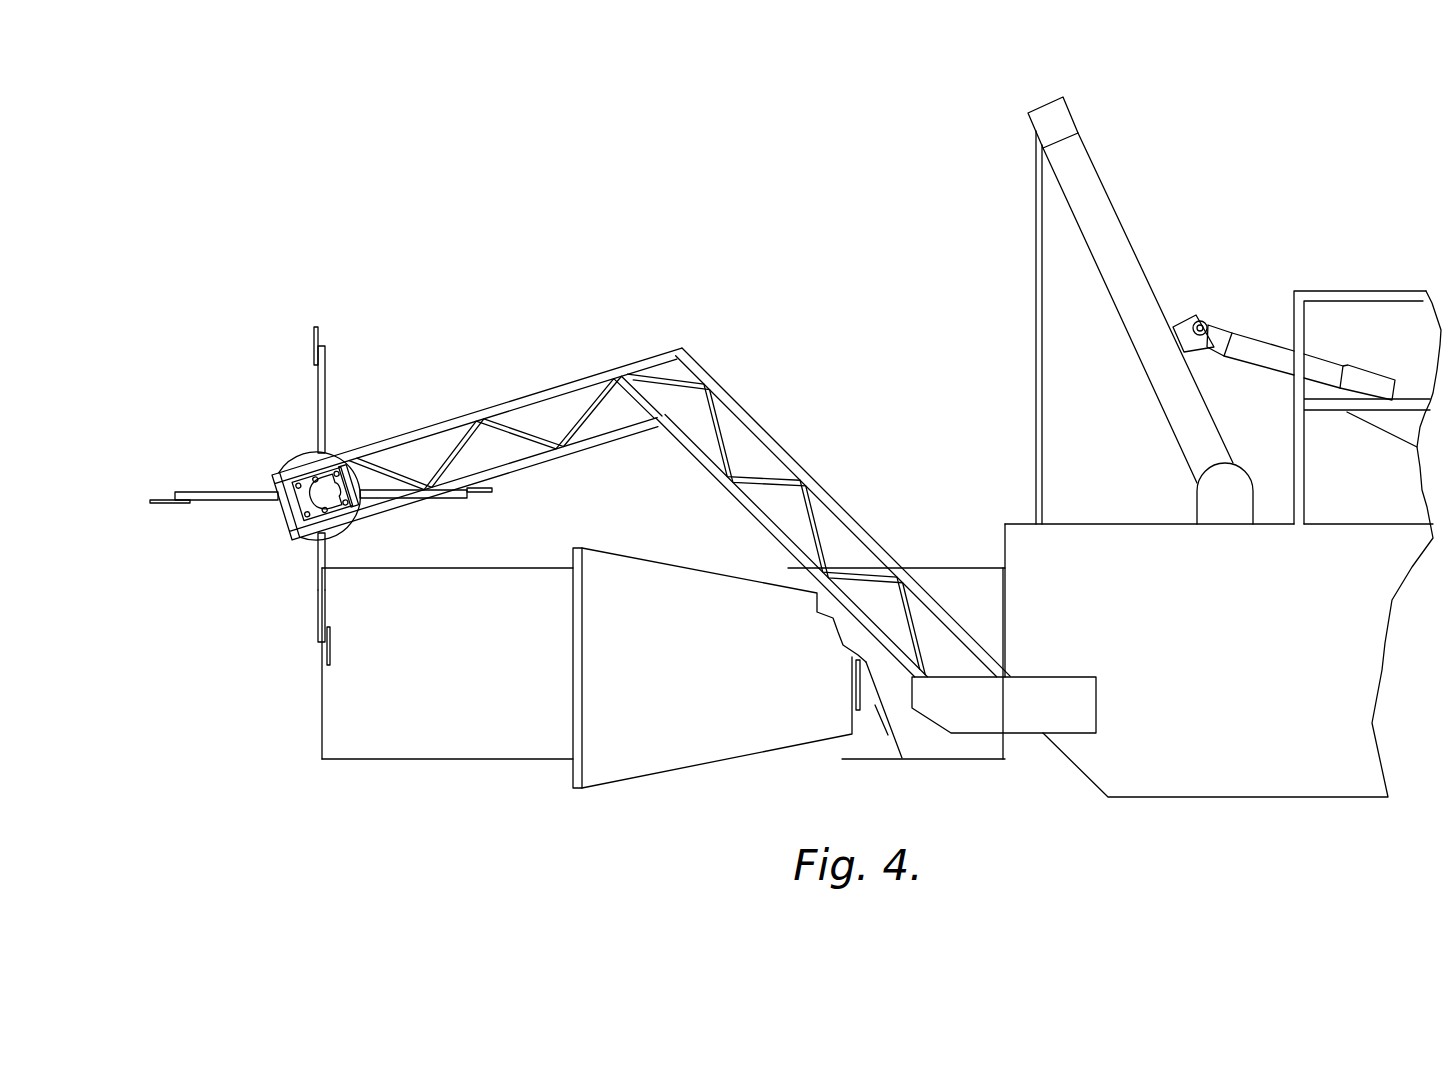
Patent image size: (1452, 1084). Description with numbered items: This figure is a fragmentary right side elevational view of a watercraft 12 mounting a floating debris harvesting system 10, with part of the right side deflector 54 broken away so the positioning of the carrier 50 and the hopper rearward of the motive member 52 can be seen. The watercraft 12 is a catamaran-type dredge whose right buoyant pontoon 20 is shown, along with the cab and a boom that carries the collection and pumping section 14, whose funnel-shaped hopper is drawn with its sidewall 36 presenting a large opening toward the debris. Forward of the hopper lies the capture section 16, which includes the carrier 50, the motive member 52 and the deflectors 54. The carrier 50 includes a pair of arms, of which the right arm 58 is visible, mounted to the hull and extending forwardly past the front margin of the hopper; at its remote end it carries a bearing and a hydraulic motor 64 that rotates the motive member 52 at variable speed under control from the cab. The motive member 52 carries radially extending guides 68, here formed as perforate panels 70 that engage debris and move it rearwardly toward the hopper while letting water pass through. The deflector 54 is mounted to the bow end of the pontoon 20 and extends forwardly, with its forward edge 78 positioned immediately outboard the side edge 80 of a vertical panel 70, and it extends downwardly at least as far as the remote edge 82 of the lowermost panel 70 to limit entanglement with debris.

The floating debris harvesting system 10 is at (462, 786).
The watercraft 12 is at (1152, 812).
The collection and pumping section 14 is at (629, 790).
The capture section 16 is at (753, 392).
The pontoon 20 is at (1252, 785).
The sidewall 36 is at (661, 668).
The carrier 50 is at (603, 372).
The motive member 52 is at (327, 372).
The deflector 54 is at (848, 750).
The arm 58 is at (802, 475).
The hydraulic motor 64 is at (317, 490).
The guide 68 is at (320, 625).
The perforate panel 70 is at (313, 382).
The forward edge 78 is at (320, 730).
The side edge 80 is at (323, 560).
The remote edge 82 is at (330, 656).